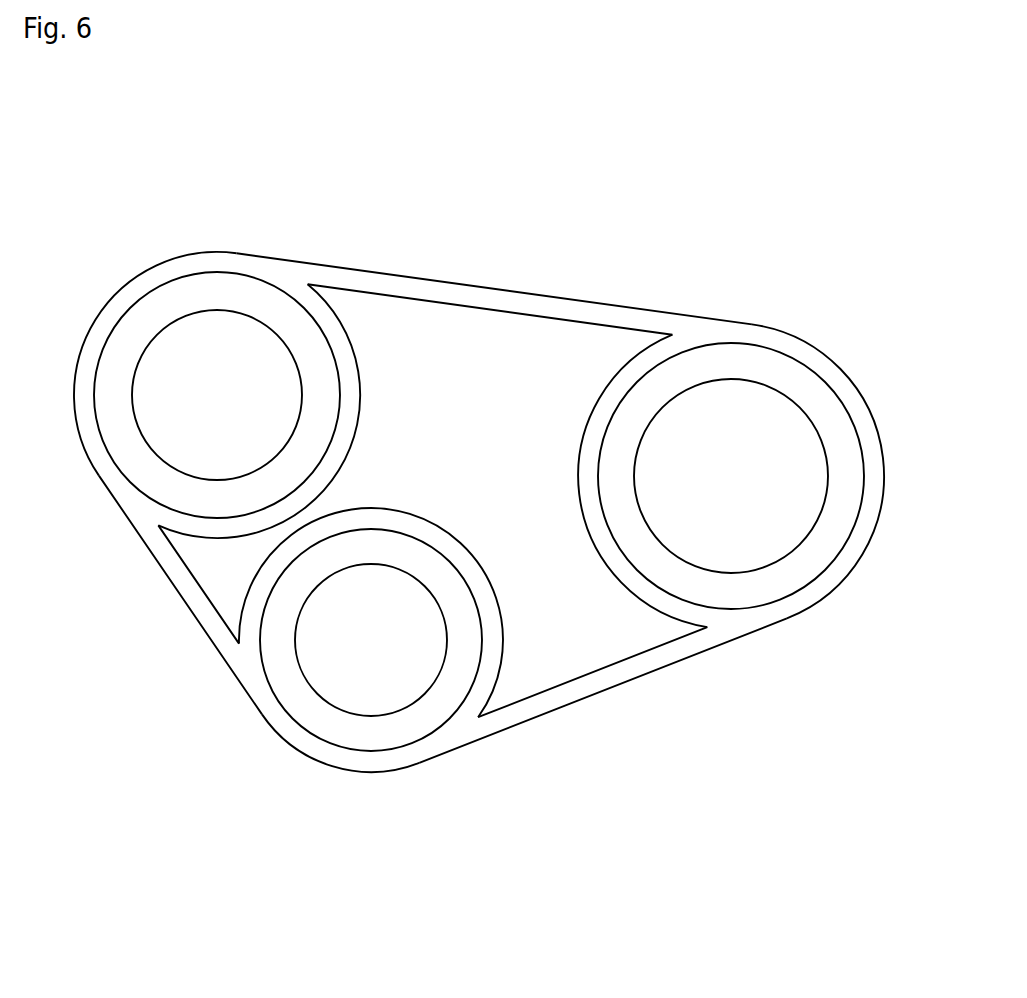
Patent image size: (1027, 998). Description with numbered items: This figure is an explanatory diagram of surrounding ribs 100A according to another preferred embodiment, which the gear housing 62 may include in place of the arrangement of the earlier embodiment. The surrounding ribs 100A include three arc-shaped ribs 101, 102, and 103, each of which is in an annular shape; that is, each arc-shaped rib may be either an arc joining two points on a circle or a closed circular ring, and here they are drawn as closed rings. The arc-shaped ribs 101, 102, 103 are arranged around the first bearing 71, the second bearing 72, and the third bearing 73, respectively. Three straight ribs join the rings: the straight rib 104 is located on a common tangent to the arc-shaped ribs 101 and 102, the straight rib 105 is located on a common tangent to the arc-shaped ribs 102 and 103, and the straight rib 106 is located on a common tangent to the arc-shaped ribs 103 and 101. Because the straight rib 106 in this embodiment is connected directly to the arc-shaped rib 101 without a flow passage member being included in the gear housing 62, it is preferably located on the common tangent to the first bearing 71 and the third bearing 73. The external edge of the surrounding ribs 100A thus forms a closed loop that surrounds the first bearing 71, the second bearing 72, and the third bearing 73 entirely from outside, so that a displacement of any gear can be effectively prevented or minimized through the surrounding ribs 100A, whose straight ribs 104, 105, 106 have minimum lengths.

The gear housing 62 is at (751, 274).
The surrounding ribs 100A is at (558, 290).
The arc-shaped rib 101 is at (128, 293).
The arc-shaped rib 102 is at (332, 763).
The arc-shaped rib 103 is at (849, 388).
The straight rib 104 is at (180, 583).
The straight rib 105 is at (607, 682).
The straight rib 106 is at (456, 289).
The first bearing 71 is at (206, 293).
The second bearing 72 is at (290, 697).
The third bearing 73 is at (845, 457).